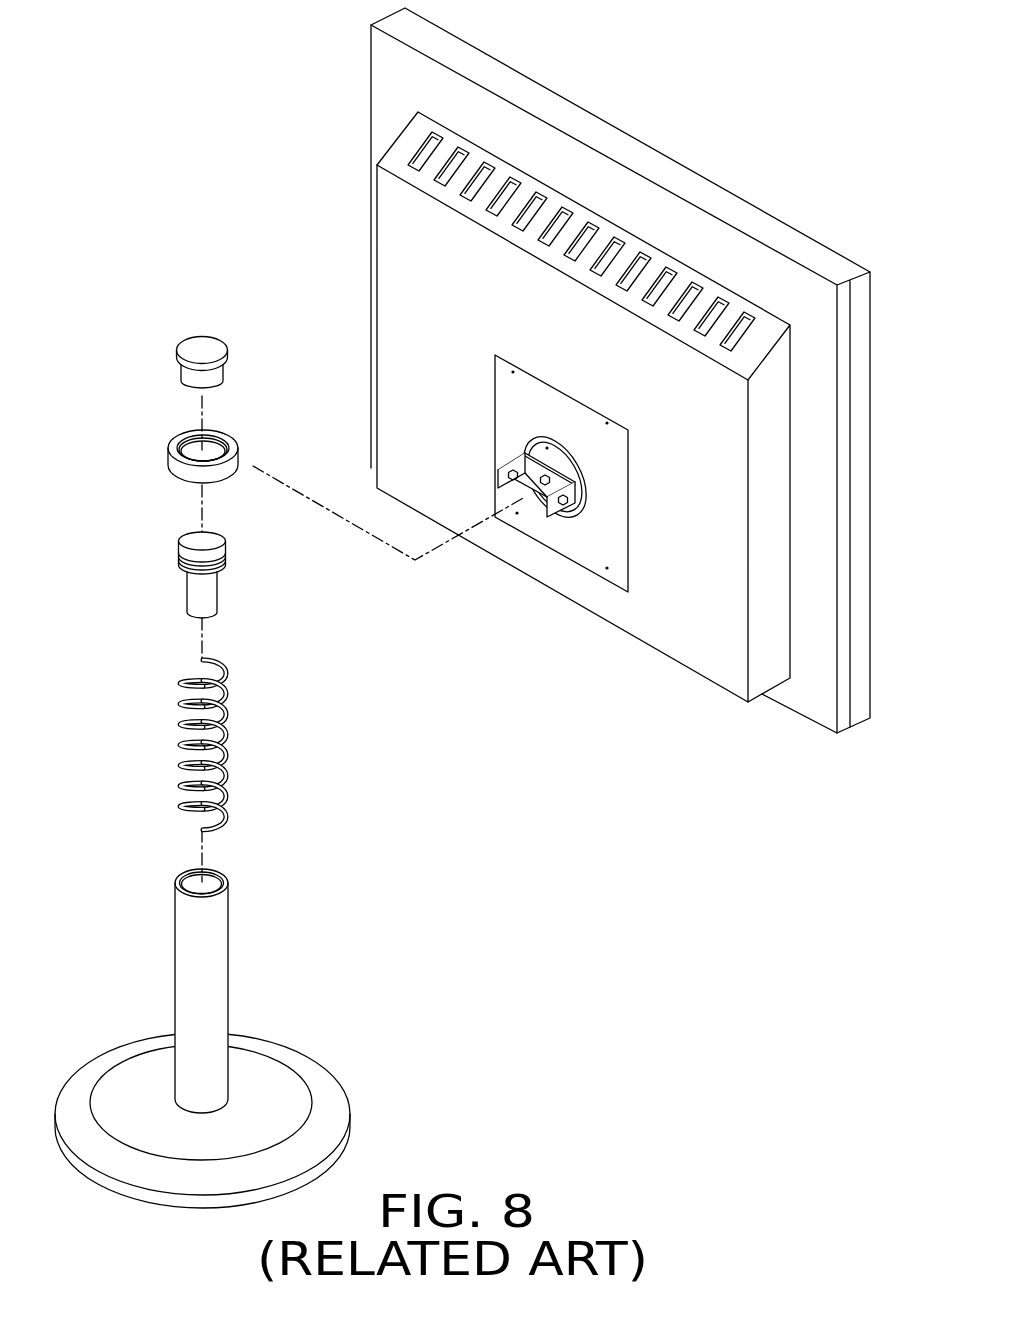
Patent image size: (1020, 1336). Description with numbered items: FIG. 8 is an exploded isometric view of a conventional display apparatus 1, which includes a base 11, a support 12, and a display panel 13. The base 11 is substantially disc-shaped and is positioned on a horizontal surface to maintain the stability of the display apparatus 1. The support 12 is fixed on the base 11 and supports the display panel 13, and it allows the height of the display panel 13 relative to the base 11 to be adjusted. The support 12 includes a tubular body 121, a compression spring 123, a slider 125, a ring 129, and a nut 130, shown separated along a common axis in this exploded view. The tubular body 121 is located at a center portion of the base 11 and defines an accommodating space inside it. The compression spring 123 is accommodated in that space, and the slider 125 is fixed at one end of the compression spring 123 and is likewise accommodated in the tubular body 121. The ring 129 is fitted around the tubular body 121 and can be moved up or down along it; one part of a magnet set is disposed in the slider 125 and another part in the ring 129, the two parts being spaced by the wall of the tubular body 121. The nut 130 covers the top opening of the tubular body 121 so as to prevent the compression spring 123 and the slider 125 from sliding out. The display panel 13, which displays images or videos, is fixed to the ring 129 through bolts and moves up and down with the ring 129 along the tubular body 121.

The display apparatus 1 is at (252, 53).
The base 11 is at (323, 1087).
The support 12 is at (242, 597).
The display panel 13 is at (697, 185).
The tubular body 121 is at (213, 927).
The compression spring 123 is at (222, 718).
The slider 125 is at (210, 547).
The ring 129 is at (232, 443).
The nut 130 is at (212, 350).